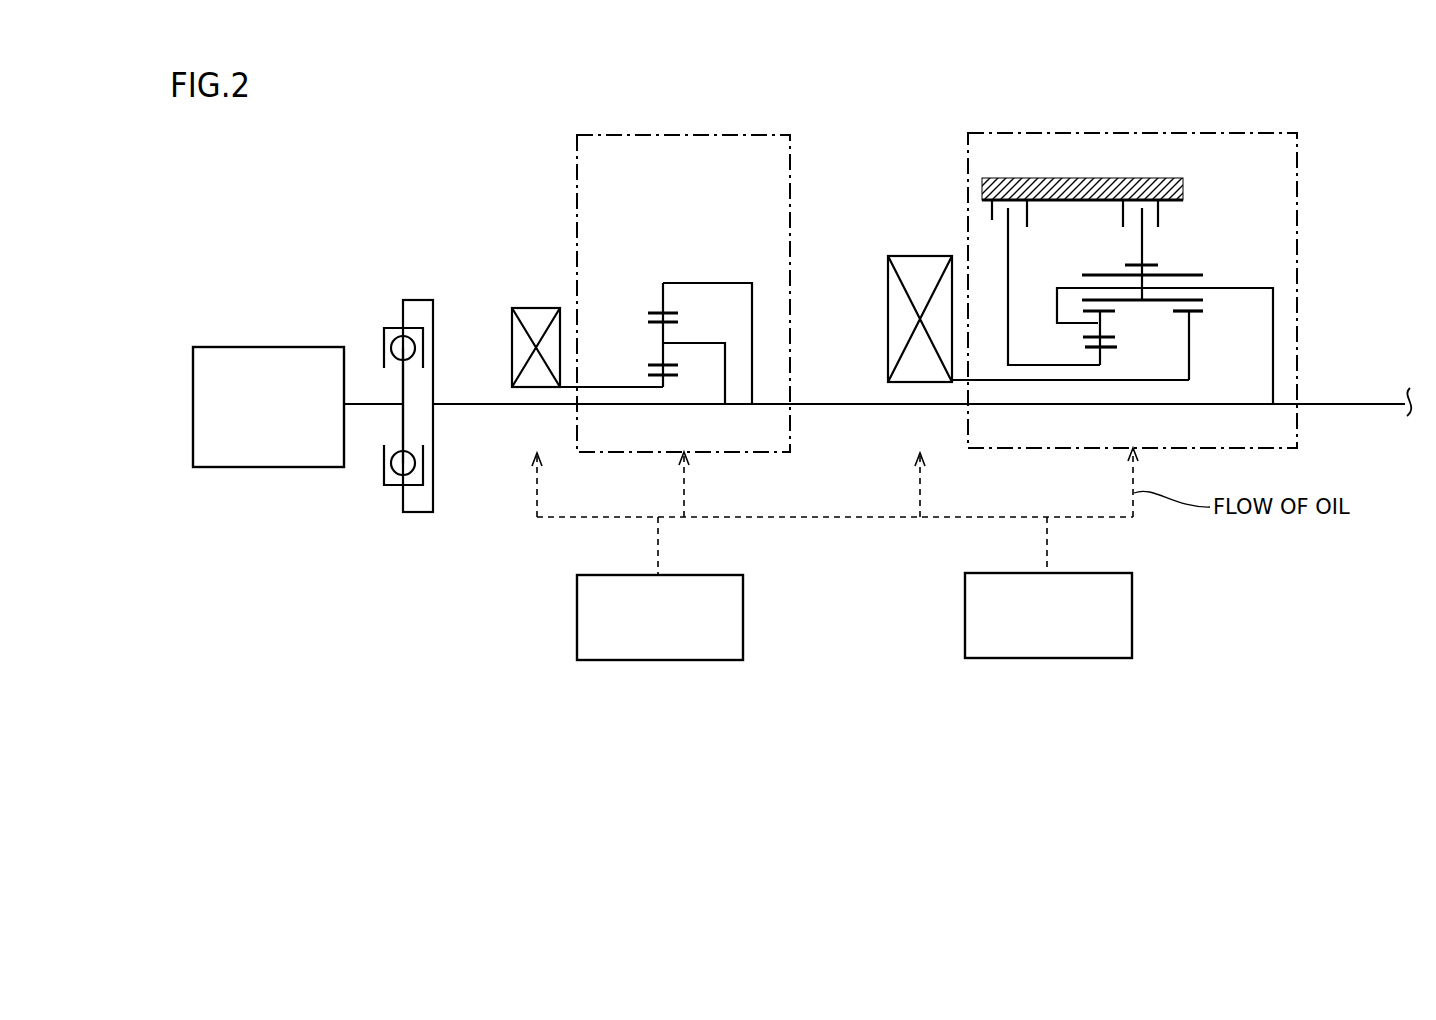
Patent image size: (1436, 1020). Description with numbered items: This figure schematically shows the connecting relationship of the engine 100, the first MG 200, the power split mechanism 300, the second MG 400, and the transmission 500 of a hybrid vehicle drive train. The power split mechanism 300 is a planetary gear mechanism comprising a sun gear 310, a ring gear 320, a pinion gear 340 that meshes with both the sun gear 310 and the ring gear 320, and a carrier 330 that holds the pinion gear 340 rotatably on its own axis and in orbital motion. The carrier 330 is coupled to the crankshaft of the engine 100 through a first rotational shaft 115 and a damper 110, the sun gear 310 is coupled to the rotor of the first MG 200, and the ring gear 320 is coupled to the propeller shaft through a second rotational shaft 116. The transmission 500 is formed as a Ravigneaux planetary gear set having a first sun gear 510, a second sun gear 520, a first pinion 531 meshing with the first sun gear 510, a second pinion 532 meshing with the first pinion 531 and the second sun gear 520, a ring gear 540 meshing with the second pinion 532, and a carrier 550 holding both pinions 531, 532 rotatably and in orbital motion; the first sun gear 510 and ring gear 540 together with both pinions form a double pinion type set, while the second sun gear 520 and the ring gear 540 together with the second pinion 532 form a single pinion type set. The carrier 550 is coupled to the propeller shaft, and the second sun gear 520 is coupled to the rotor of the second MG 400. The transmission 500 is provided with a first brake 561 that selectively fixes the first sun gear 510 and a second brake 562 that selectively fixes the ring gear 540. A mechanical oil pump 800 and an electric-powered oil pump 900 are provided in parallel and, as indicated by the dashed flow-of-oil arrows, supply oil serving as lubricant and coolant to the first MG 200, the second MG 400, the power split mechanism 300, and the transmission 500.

The engine 100 is at (277, 467).
The damper 110 is at (390, 485).
The first rotational shaft 115 is at (481, 408).
The second rotational shaft 116 is at (845, 406).
The first MG 200 is at (512, 353).
The power split mechanism 300 is at (577, 160).
The sun gear 310 is at (674, 377).
The ring gear 320 is at (651, 312).
The carrier 330 is at (718, 343).
The pinion gear 340 is at (648, 325).
The second MG 400 is at (888, 300).
The transmission 500 is at (968, 157).
The first sun gear 510 is at (1108, 349).
The second sun gear 520 is at (1195, 313).
The first pinion 531 is at (1083, 337).
The second pinion 532 is at (1175, 274).
The ring gear 540 is at (1150, 262).
The carrier 550 is at (1230, 288).
The B1 brake 561 is at (1018, 210).
The B2 brake 562 is at (1150, 210).
The mechanical oil pump 800 is at (680, 660).
The electric-powered oil pump 900 is at (1070, 658).